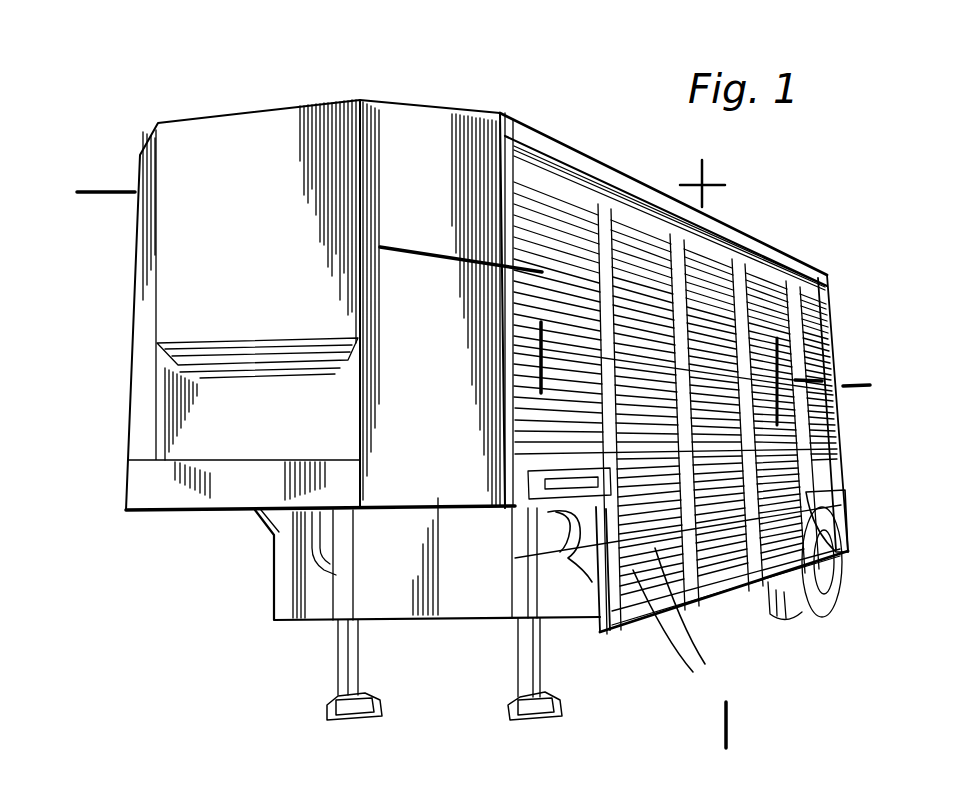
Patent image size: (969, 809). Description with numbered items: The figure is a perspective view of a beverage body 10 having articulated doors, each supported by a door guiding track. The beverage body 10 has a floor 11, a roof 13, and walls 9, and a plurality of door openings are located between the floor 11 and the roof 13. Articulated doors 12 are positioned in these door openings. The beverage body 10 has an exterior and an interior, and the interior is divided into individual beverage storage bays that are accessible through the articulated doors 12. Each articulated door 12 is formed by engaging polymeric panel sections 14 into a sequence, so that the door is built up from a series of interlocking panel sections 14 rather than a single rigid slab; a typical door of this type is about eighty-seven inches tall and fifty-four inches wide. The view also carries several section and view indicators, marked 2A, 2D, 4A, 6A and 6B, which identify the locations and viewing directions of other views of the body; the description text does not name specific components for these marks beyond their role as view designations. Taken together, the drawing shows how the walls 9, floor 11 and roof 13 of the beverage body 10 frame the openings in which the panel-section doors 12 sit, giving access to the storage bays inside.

The section line 2A is at (98, 186).
The section line 2D is at (762, 338).
The section line 4A is at (528, 327).
The section line 6A is at (437, 240).
The section line 6B is at (803, 364).
The walls 9 is at (385, 123).
The beverage body 10 is at (230, 554).
The floor 11 is at (432, 622).
The articulated doors 12 is at (635, 236).
The roof 13 is at (527, 113).
The polymeric panel sections 14 is at (682, 622).